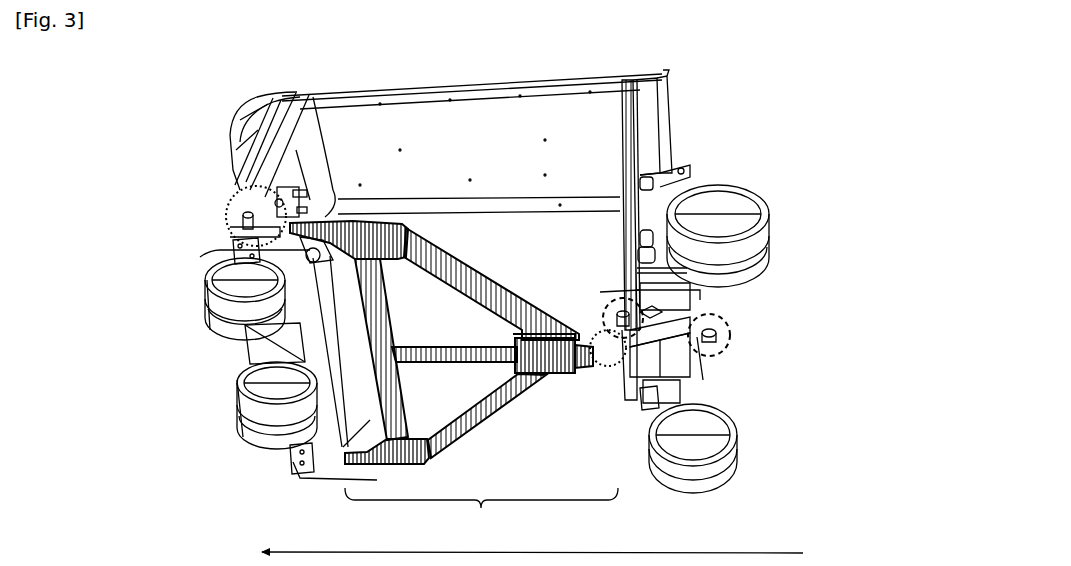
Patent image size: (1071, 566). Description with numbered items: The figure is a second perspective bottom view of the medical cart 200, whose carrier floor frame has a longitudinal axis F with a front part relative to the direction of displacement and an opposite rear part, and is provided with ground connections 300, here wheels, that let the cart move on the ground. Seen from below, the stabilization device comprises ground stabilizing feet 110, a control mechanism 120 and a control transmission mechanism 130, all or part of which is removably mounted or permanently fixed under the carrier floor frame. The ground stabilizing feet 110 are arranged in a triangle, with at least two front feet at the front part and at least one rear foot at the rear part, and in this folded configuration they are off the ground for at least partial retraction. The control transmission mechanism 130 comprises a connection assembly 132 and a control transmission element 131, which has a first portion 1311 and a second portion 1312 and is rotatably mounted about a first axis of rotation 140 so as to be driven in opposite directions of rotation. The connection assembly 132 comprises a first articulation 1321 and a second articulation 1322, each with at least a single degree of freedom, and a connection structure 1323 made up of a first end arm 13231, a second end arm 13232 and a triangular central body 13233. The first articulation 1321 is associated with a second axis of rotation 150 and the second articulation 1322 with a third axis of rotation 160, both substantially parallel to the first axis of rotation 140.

The medical cart 200 is at (176, 112).
The third axis of rotation 160 is at (248, 206).
The second articulation 1322 is at (233, 187).
The ground stabilizing feet 110 is at (231, 248).
The ground connections 300 is at (216, 413).
The control transmission mechanism 130 is at (519, 414).
The connection assembly 132 is at (557, 272).
The first end arm 13231 is at (553, 380).
The second end arm 13232 is at (344, 221).
The central body 13233 is at (470, 245).
The first articulation 1321 is at (585, 367).
The connection structure 1323 is at (487, 539).
The second axis of rotation 150 is at (620, 306).
The second portion of the control transmission element 1312 is at (604, 300).
The control mechanism 120 is at (725, 312).
The first portion of the control transmission element 1311 is at (777, 381).
The control transmission element 131 is at (671, 327).
The first axis of rotation 140 is at (651, 308).
The longitudinal axis F is at (760, 552).